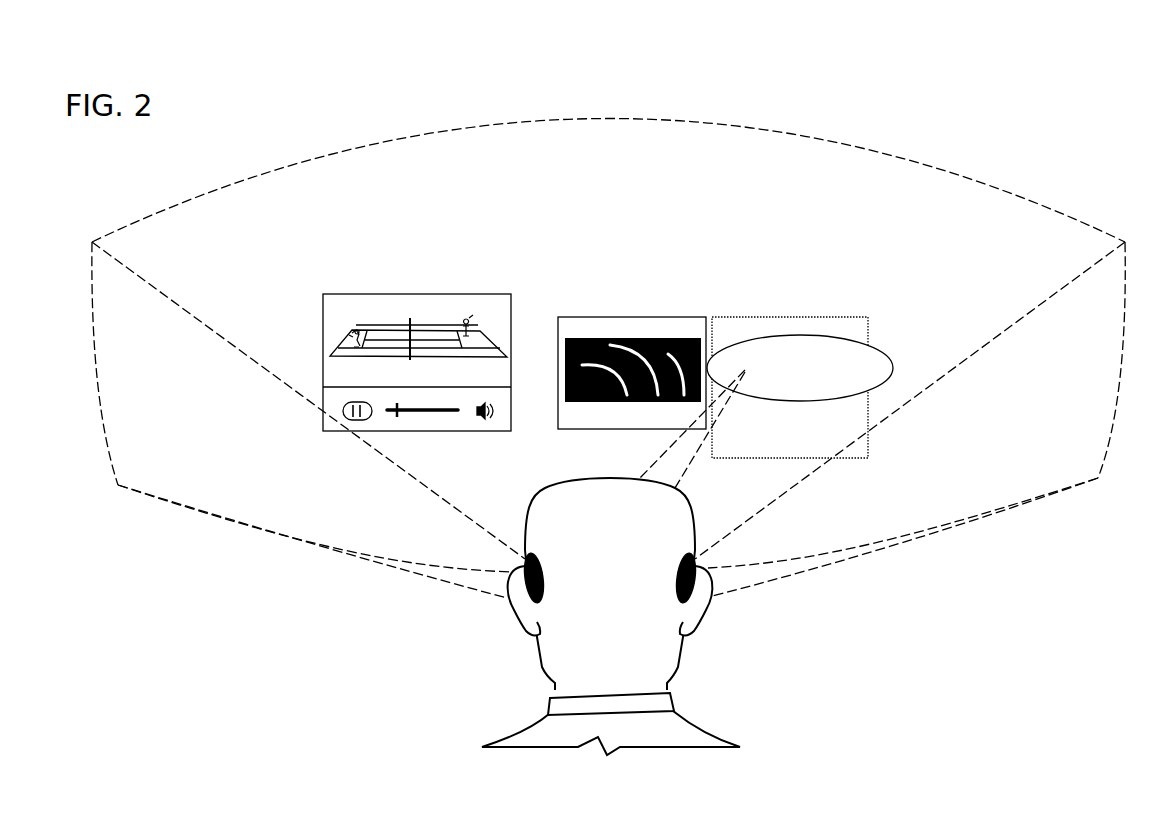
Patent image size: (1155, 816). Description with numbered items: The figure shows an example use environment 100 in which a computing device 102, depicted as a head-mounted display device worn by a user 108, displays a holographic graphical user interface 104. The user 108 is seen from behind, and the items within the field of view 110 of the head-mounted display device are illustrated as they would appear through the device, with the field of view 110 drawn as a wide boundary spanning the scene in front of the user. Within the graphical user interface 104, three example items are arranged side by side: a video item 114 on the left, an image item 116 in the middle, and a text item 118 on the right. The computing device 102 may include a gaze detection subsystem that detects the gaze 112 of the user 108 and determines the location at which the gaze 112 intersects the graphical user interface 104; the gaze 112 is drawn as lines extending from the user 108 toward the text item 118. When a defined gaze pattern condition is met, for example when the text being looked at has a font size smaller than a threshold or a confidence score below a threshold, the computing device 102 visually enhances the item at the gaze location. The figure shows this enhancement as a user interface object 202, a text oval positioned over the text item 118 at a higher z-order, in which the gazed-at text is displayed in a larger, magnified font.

The use environment 100 is at (1027, 64).
The computing device 102 is at (522, 630).
The graphical user interface 104 is at (338, 224).
The user 108 is at (624, 564).
The field of view 110 is at (247, 175).
The gaze 112 is at (668, 449).
The video item 114 is at (375, 294).
The image item 116 is at (614, 313).
The text item 118 is at (845, 376).
The user interface object 202 is at (885, 343).